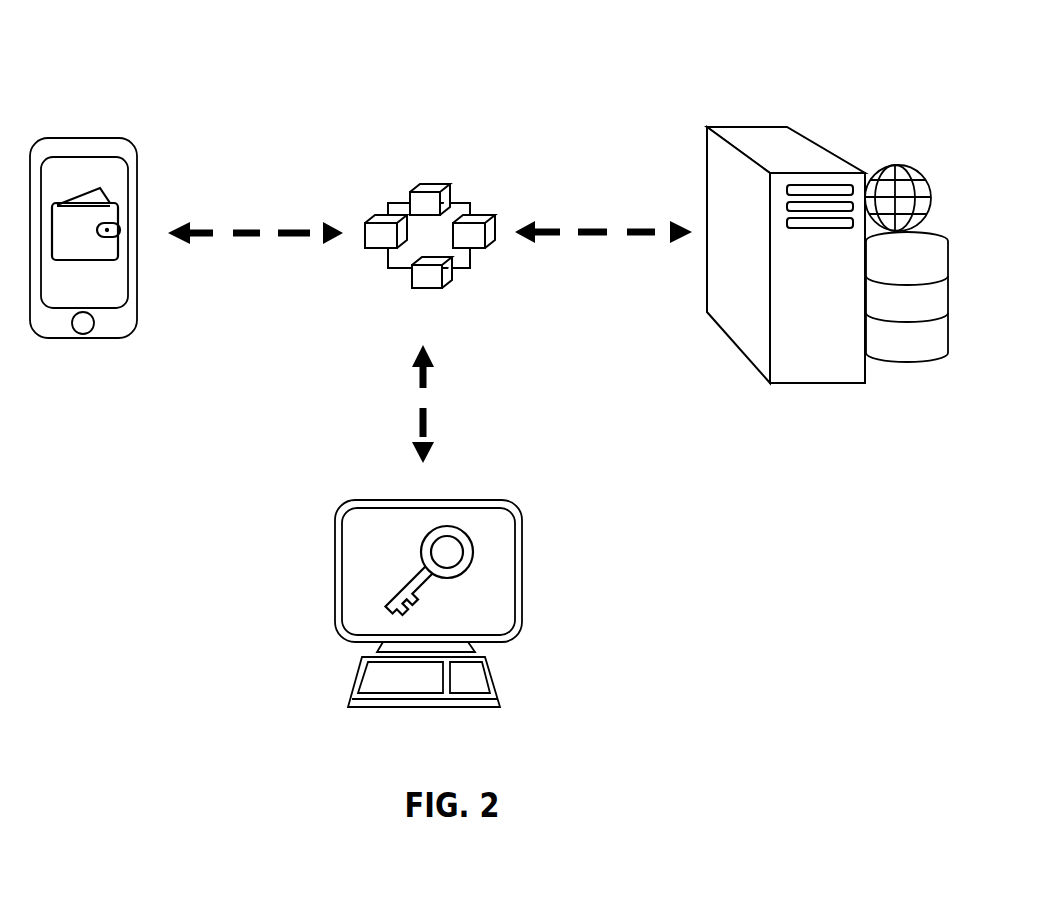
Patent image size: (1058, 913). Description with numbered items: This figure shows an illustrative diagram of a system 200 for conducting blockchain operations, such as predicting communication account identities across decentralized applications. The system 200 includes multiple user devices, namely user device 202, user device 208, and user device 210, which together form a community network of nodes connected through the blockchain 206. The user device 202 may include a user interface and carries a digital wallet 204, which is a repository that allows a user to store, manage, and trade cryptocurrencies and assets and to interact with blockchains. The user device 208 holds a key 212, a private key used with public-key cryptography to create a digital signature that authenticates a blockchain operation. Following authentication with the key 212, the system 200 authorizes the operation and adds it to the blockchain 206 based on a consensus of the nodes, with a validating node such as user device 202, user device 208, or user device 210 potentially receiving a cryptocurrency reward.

The system 200 is at (453, 65).
The user device 202 is at (112, 254).
The digital wallet 204 is at (113, 180).
The blockchain 206 is at (465, 300).
The user device 208 is at (460, 592).
The user device 210 is at (787, 113).
The key 212 is at (398, 537).